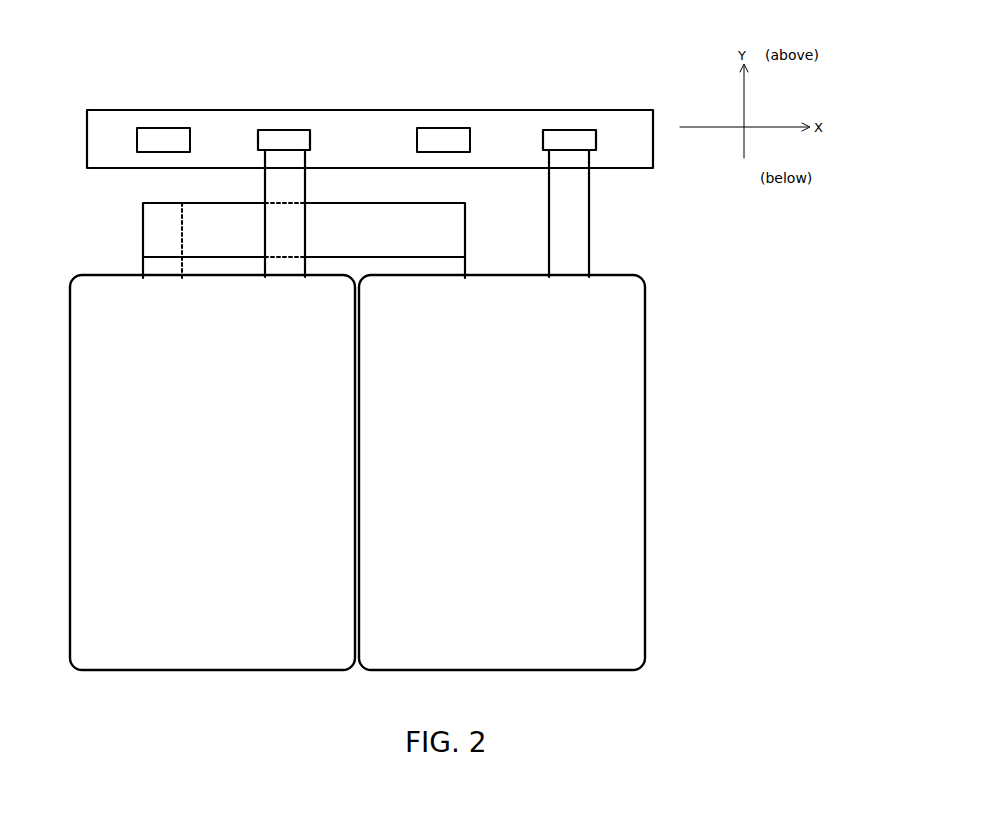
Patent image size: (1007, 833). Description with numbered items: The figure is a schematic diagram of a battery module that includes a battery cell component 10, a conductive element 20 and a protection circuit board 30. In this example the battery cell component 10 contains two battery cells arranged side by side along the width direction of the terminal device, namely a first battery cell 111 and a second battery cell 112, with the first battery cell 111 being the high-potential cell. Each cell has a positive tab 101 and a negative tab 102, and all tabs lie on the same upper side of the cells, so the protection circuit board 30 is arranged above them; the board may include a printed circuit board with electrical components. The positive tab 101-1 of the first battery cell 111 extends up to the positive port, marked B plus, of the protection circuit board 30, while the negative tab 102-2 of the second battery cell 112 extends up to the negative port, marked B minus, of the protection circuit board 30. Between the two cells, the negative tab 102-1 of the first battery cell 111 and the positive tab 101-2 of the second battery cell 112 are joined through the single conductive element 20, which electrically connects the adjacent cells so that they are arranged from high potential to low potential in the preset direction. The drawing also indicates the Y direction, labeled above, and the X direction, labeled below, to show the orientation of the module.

The battery cell component 10 is at (419, 472).
The first battery cell 111 is at (323, 403).
The second battery cell 112 is at (597, 467).
The positive tab 101 is at (432, 132).
The positive tab of the first battery cell 101-1 is at (289, 192).
The positive tab of the second battery cell 101-2 is at (468, 240).
The negative tab 102 is at (487, 293).
The negative tab of the first battery cell 102-1 is at (167, 268).
The negative tab of the second battery cell 102-2 is at (585, 210).
The conductive element 20 is at (212, 227).
The protection circuit board 30 is at (630, 145).